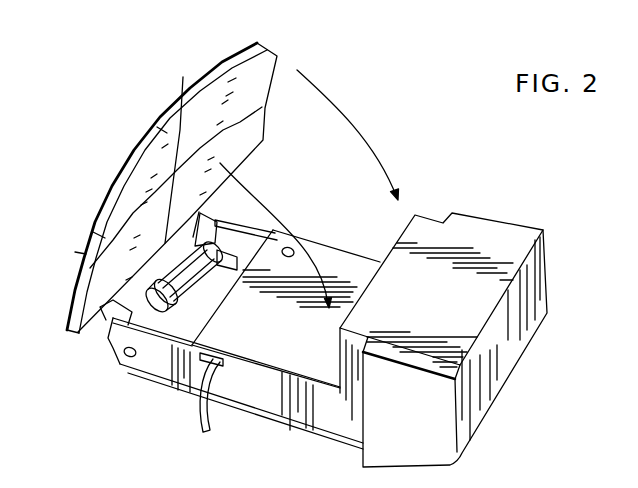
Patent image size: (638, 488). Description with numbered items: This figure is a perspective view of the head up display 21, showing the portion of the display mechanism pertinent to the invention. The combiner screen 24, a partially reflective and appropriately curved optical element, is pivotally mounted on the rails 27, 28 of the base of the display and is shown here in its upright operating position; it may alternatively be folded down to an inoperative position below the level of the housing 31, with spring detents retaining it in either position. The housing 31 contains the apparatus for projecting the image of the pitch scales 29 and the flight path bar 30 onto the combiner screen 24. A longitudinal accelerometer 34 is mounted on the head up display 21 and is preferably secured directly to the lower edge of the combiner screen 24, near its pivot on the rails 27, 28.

The head up display 21 is at (445, 166).
The combiner screen 24 is at (265, 65).
The rail 27 is at (242, 230).
The rail 28 is at (155, 362).
The pitch scales 29 is at (217, 88).
The flight path bar 30 is at (100, 238).
The housing 31 is at (480, 228).
The longitudinal accelerometer 34 is at (197, 288).